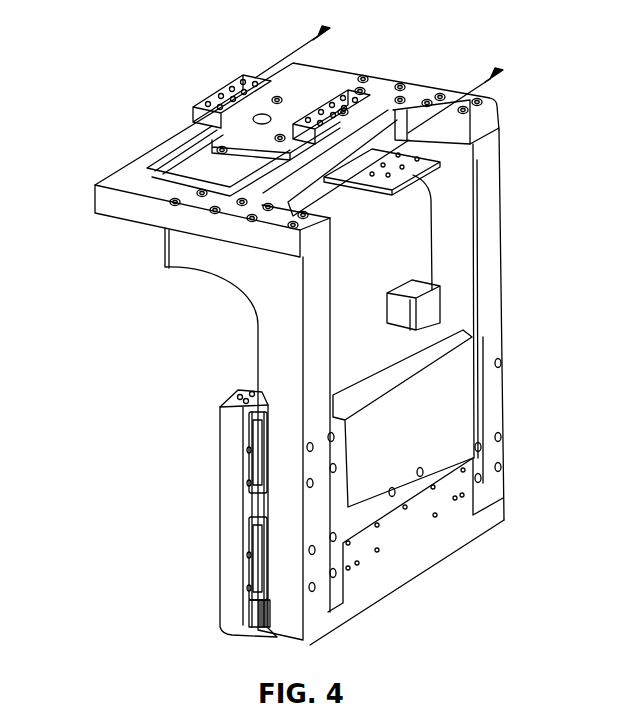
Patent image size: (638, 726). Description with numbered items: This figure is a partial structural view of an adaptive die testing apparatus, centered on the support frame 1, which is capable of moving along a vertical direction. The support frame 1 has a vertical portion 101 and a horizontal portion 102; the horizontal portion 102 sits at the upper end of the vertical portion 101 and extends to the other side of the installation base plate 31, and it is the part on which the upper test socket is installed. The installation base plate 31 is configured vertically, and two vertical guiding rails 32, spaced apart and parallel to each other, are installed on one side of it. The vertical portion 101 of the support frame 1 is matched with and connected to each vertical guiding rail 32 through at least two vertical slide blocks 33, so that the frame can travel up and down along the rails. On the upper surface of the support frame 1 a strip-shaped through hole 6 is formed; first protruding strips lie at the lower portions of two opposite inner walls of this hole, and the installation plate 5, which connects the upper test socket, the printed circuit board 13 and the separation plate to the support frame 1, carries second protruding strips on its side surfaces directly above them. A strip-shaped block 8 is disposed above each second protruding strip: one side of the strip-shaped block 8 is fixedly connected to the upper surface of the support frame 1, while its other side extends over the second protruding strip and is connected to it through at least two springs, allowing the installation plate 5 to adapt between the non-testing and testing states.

The support frame 1 is at (499, 126).
The installation plate 5 is at (290, 120).
The strip-shaped through hole 6 is at (170, 157).
The strip-shaped block 8 is at (195, 115).
The printed circuit board 13 is at (418, 168).
The installation base plate 31 is at (230, 533).
The vertical guiding rail 32 is at (263, 617).
The vertical slide block 33 is at (257, 467).
The vertical portion 101 is at (287, 360).
The horizontal portion 102 is at (133, 206).